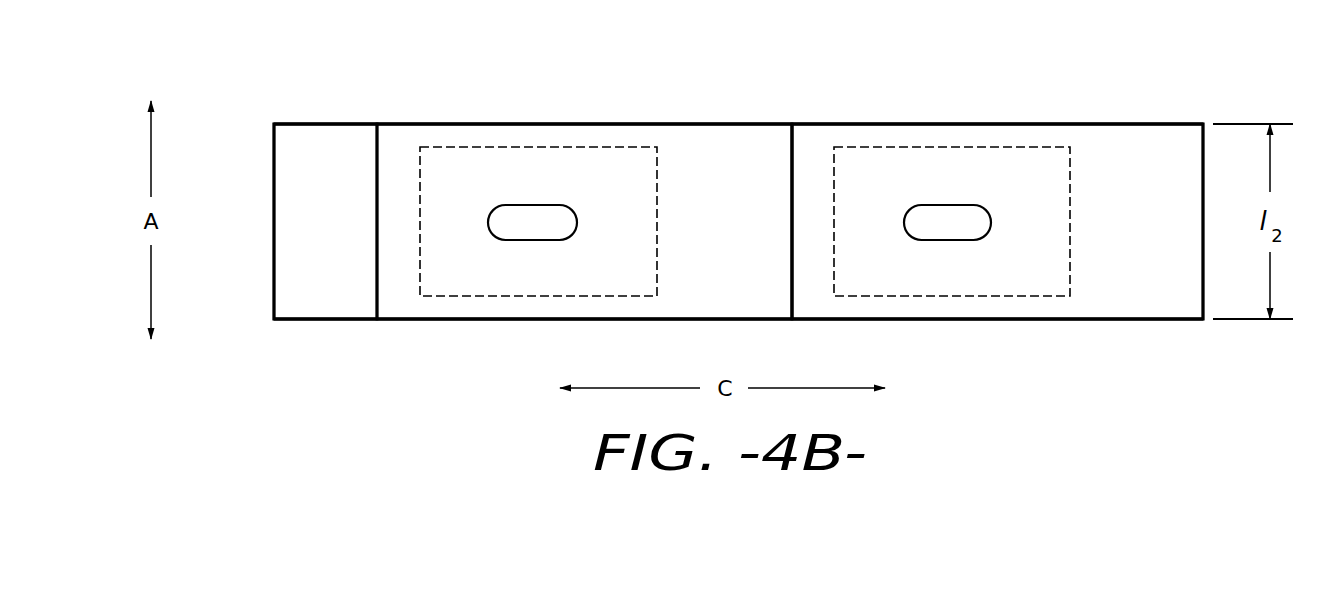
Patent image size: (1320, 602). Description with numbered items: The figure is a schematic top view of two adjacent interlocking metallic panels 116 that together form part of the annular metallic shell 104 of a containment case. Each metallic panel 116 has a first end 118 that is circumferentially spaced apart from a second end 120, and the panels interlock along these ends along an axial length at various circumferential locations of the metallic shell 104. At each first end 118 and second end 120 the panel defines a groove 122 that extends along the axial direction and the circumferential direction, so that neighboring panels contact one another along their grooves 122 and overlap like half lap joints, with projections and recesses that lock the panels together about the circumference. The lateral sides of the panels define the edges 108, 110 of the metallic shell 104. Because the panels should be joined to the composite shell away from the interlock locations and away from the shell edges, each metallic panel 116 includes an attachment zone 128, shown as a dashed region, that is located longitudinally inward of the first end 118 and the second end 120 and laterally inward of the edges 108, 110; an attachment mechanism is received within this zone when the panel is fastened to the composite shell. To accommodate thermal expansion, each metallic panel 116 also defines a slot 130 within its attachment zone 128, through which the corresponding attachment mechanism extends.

The metallic shell 104 is at (1078, 72).
The edge of the metallic shell 108 is at (592, 113).
The edge of the metallic shell 110 is at (513, 332).
The metallic panel 116 is at (707, 157).
The first end 118 is at (258, 170).
The second end 120 is at (805, 183).
The groove 122 is at (320, 288).
The attachment zone 128 is at (548, 172).
The slot 130 is at (520, 223).